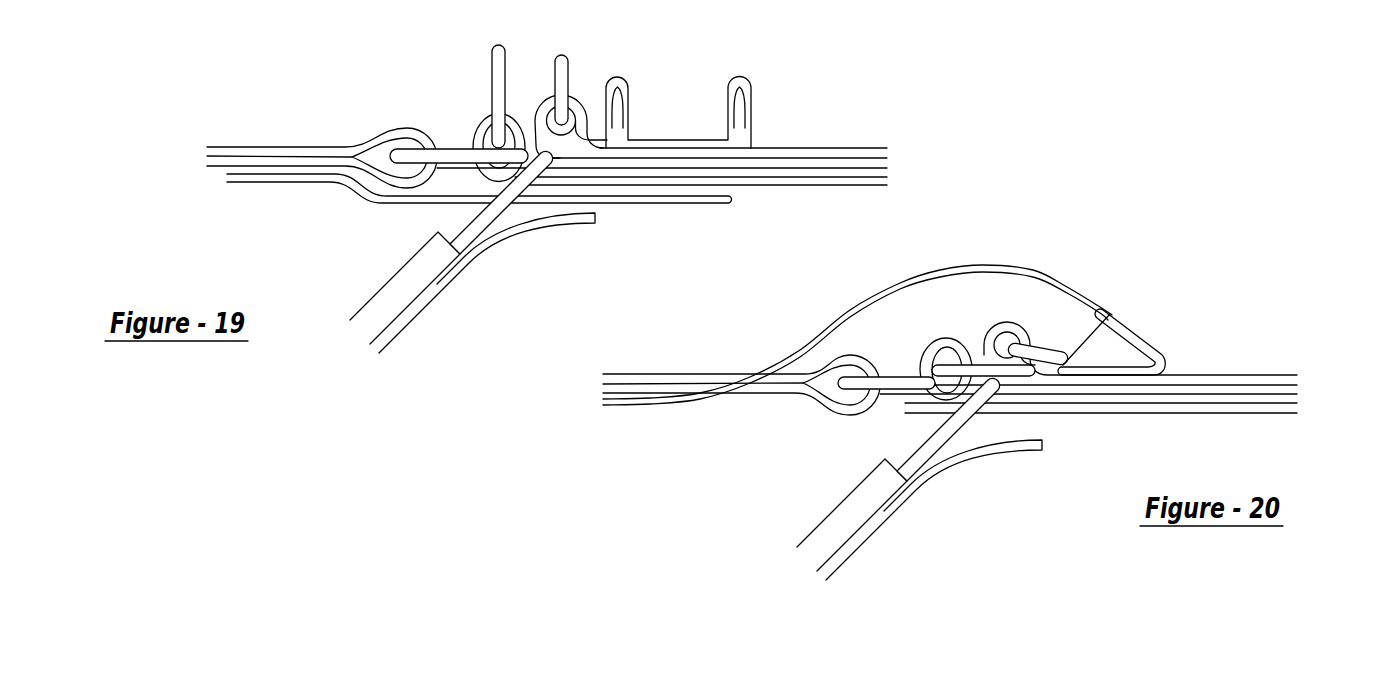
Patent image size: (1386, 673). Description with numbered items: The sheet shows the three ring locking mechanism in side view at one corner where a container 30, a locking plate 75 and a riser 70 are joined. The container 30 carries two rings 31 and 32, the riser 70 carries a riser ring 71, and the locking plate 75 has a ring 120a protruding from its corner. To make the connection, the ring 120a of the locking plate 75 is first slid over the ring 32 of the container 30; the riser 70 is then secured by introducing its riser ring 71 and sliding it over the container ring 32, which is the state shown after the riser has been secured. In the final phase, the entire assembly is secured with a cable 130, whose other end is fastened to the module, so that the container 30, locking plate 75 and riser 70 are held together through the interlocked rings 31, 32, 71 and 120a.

In FIG. 19, the container 30 is at (790, 150).
In FIG. 20, the container 30 is at (1238, 375).
In FIG. 19, the ring 31 is at (562, 57).
In FIG. 20, the ring 31 is at (1041, 348).
In FIG. 19, the ring 32 is at (498, 46).
In FIG. 20, the ring 32 is at (978, 353).
In FIG. 19, the riser 70 is at (307, 147).
In FIG. 20, the riser 70 is at (697, 373).
In FIG. 19, the ring 71 is at (444, 150).
In FIG. 20, the ring 71 is at (889, 373).
In FIG. 19, the locking plate 75 is at (388, 278).
In FIG. 20, the locking plate 75 is at (887, 510).
In FIG. 19, the ring 120a is at (474, 226).
In FIG. 20, the ring 120a is at (891, 429).
In FIG. 20, the cable 130 is at (1130, 323).